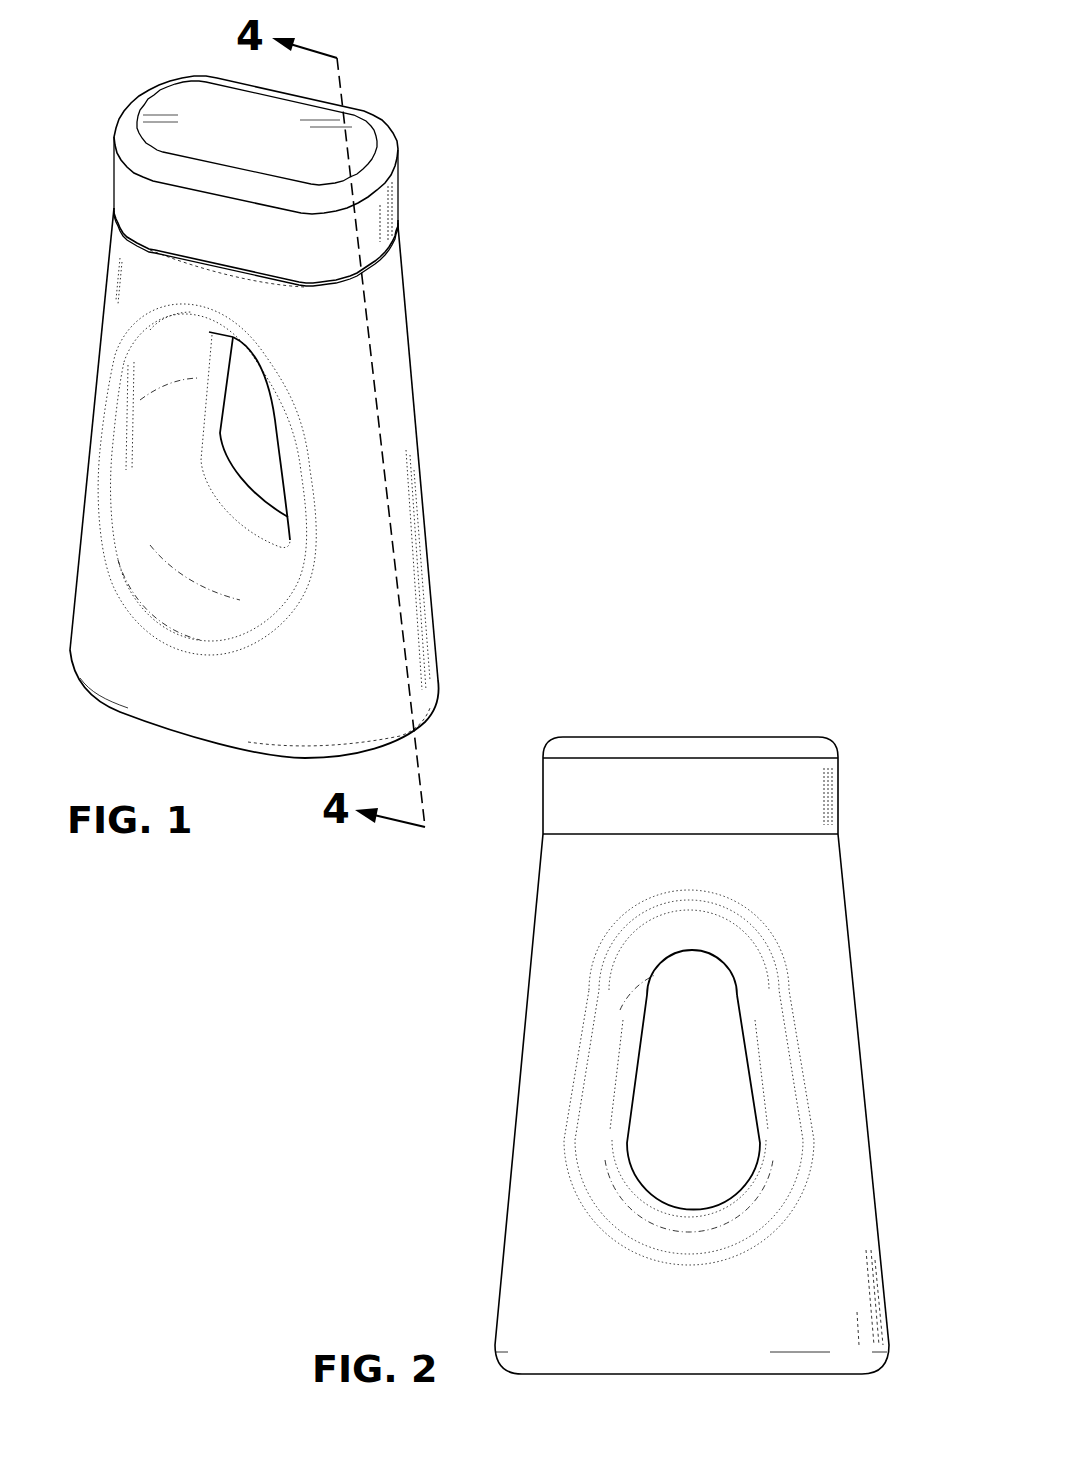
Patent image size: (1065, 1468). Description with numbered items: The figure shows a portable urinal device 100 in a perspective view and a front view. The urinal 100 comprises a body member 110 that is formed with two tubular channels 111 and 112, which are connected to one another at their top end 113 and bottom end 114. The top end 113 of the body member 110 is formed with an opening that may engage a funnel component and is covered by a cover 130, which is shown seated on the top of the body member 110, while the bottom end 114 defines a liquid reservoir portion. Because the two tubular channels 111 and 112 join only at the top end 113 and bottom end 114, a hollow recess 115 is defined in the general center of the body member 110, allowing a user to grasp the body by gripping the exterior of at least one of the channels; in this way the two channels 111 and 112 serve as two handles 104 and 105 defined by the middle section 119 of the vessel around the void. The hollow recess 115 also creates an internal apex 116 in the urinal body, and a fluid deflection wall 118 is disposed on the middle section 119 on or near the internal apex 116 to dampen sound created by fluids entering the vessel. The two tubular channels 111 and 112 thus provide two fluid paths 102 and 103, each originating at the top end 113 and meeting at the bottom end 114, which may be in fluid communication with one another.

In FIG. 1, the portable urinal device 100 is at (399, 80).
In FIG. 2, the portable urinal device 100 is at (815, 691).
In FIG. 2, the fluid path 102 is at (537, 1142).
In FIG. 2, the fluid path 103 is at (812, 1145).
In FIG. 2, the handle 104 is at (557, 1022).
In FIG. 2, the handle 105 is at (803, 988).
In FIG. 1, the body member 110 is at (380, 422).
In FIG. 2, the body member 110 is at (573, 913).
In FIG. 1, the tubular channel 111 is at (138, 420).
In FIG. 2, the tubular channel 111 is at (557, 1100).
In FIG. 1, the tubular channel 112 is at (340, 480).
In FIG. 2, the tubular channel 112 is at (800, 1043).
In FIG. 1, the top end 113 is at (295, 308).
In FIG. 2, the top end 113 is at (700, 860).
In FIG. 1, the bottom end 114 is at (203, 685).
In FIG. 2, the bottom end 114 is at (690, 1288).
In FIG. 1, the hollow recess 115 is at (248, 438).
In FIG. 1, the internal apex 116 is at (253, 352).
In FIG. 2, the internal apex 116 is at (663, 953).
In FIG. 2, the deflection wall 118 is at (683, 947).
In FIG. 2, the middle section 119 is at (637, 1053).
In FIG. 1, the cover 130 is at (192, 215).
In FIG. 2, the cover 130 is at (732, 783).